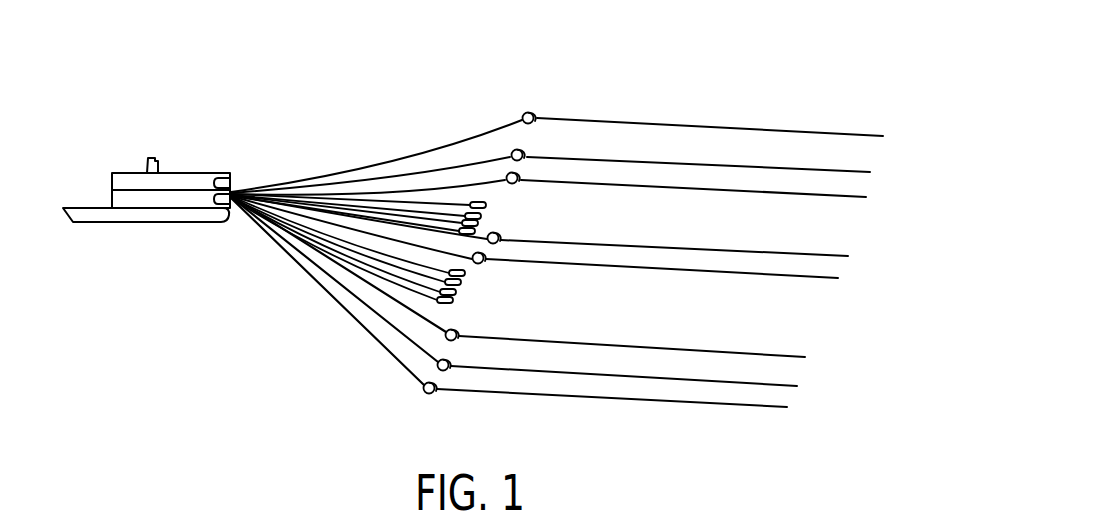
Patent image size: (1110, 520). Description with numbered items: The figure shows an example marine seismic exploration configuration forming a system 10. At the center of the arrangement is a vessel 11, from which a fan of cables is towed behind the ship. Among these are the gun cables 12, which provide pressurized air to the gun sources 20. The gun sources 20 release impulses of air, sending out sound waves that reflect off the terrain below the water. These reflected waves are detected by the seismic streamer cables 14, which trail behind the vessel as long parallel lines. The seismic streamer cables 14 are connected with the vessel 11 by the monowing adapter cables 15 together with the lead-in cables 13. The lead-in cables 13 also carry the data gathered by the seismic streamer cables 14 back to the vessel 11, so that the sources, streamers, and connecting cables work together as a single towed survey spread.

The system 10 is at (96, 84).
The vessel 11 is at (178, 172).
The gun cables 12 is at (332, 202).
The lead-in cables 13 is at (350, 320).
The seismic streamer cables 14 is at (682, 402).
The monowing adapter cables 15 is at (426, 390).
The gun sources 20 is at (463, 203).